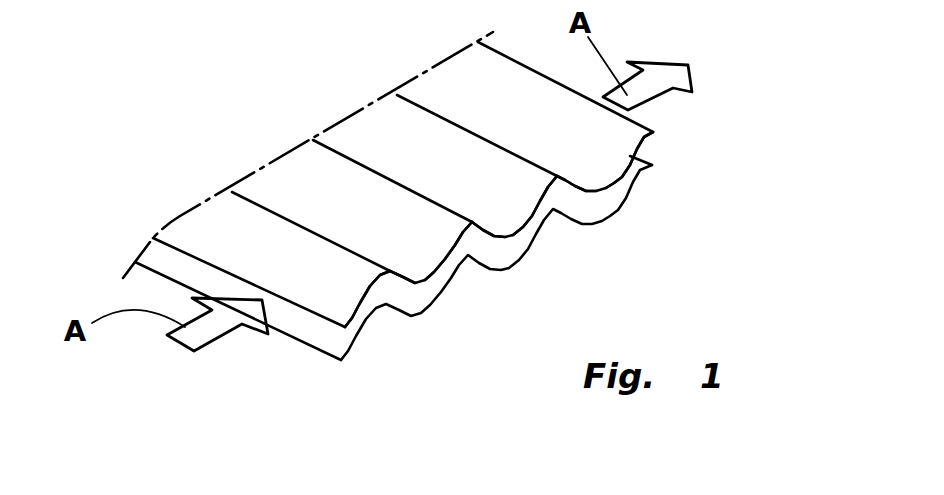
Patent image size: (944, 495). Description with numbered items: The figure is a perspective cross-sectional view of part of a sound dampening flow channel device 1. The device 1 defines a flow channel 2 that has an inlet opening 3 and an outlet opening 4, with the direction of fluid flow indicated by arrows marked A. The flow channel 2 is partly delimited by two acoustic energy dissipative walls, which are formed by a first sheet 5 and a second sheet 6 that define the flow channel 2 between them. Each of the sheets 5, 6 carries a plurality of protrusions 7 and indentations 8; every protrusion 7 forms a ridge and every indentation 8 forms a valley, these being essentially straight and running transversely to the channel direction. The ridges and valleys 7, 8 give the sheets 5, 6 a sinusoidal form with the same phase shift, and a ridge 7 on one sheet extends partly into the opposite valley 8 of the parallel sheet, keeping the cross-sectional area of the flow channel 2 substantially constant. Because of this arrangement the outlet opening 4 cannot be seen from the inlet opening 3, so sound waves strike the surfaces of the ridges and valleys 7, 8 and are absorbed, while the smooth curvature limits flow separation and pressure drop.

The sound dampening flow channel device 1 is at (305, 117).
The flow channel 2 is at (443, 284).
The inlet opening 3 is at (317, 348).
The outlet opening 4 is at (657, 149).
The first sheet 5 is at (450, 87).
The second sheet 6 is at (354, 357).
The protrusion 7 is at (368, 305).
The indentation 8 is at (392, 274).